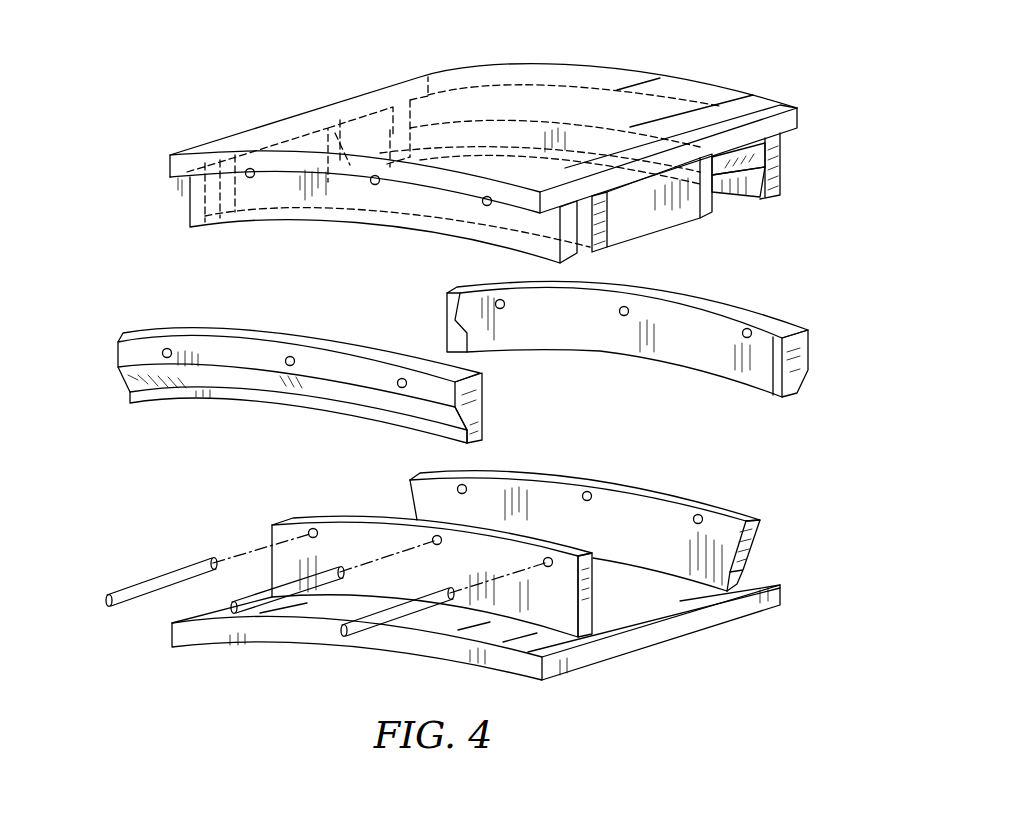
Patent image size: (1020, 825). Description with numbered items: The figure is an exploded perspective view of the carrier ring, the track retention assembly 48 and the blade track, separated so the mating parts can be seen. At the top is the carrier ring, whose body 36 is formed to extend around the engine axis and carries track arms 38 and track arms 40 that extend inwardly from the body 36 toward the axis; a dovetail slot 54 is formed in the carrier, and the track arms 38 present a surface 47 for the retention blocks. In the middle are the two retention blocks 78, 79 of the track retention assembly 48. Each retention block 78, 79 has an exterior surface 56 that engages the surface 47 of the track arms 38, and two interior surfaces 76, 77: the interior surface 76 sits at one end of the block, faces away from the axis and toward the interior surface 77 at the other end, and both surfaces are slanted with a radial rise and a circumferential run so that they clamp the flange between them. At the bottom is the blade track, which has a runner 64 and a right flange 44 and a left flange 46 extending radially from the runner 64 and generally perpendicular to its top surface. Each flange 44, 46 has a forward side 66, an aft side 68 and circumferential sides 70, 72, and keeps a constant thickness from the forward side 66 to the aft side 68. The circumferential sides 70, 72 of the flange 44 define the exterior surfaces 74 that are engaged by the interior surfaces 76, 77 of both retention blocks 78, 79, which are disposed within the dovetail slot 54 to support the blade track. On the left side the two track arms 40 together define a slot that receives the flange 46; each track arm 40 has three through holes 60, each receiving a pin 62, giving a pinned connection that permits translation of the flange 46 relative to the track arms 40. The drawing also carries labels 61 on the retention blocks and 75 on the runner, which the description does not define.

The body 36 is at (616, 84).
The track arms 38 is at (803, 148).
The track arms 40 is at (587, 247).
The flange 44 is at (442, 567).
The flange 46 is at (284, 572).
The surface 47 is at (766, 192).
The track retention assembly 48 is at (380, 234).
The dovetail slot 54 is at (758, 157).
The exterior surface 56 is at (133, 380).
The through holes 60 is at (324, 532).
The bar hole 61 is at (397, 380).
The pin 62 is at (98, 601).
The runner 64 is at (476, 650).
The forward side 66 is at (536, 557).
The aft side 68 is at (323, 500).
The circumferential side 70 is at (390, 494).
The circumferential side 72 is at (606, 609).
The exterior surfaces 74 is at (388, 475).
The base groove 75 is at (697, 596).
The interior surface 76 is at (158, 316).
The interior surface 77 is at (478, 354).
The retention block 78 is at (297, 371).
The retention block 79 is at (465, 277).